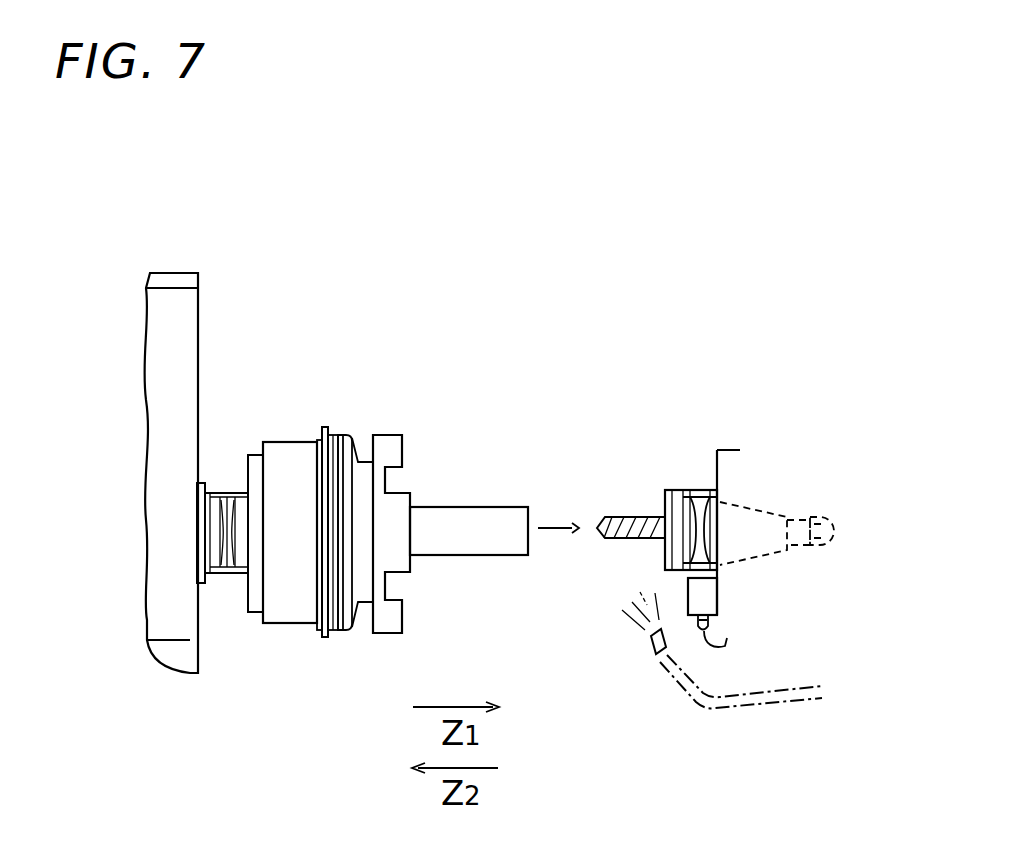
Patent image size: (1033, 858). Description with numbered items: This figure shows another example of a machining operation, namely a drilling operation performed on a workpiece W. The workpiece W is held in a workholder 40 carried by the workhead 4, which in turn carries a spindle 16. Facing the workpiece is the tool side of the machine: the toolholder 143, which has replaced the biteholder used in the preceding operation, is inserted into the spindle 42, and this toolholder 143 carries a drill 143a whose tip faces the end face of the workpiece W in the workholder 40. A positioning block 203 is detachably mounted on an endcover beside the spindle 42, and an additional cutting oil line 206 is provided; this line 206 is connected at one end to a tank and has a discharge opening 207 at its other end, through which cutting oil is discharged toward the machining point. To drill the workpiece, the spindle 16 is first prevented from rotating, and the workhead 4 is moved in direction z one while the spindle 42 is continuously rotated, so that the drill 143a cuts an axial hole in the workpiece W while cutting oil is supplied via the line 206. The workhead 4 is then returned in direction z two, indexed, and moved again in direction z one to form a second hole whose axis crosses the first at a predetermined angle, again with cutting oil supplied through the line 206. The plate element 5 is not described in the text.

The workhead 4 is at (187, 622).
The spindle 16 is at (200, 482).
The workholder 40 is at (287, 442).
The workpiece W is at (410, 488).
The drill 143a is at (628, 540).
The spindle 42 is at (717, 488).
The tool post plate 5 is at (729, 448).
The toolholder 143 is at (707, 540).
The positioning block 203 is at (717, 598).
The discharge opening 207 is at (667, 657).
The cutting oil line 206 is at (742, 702).